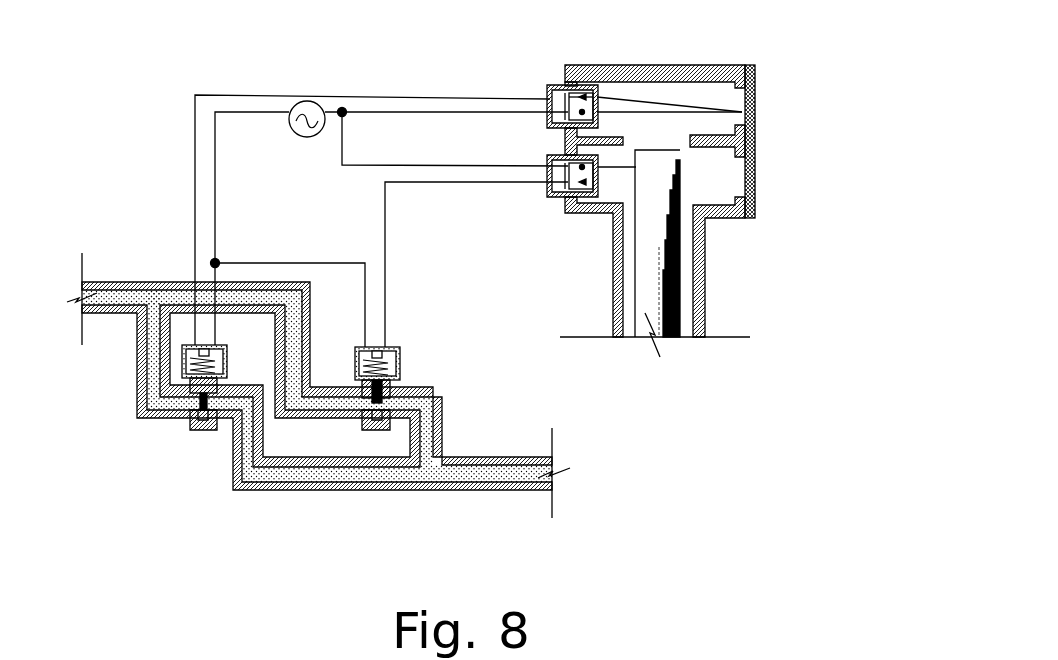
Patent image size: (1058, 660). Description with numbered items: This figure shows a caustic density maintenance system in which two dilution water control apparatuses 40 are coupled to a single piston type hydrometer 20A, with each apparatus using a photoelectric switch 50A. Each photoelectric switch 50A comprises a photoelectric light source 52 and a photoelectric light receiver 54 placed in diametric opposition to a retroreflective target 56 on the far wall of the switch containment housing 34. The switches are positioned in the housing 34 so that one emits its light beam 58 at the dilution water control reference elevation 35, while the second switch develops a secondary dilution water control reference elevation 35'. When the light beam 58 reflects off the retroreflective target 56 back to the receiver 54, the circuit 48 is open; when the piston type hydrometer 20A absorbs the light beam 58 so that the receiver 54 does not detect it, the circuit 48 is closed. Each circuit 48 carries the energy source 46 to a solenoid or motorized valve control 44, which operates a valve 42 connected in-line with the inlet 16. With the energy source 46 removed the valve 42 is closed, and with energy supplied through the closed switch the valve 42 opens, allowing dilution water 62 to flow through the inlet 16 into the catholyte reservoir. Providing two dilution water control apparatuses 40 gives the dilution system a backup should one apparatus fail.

The inlet 16 is at (482, 475).
The piston type hydrometer 20A is at (680, 238).
The switch containment housing 34 is at (655, 65).
The dilution water control reference elevation 35 is at (832, 169).
The secondary dilution water control reference elevation 35' is at (827, 115).
The dilution water control apparatus 40 is at (357, 234).
The valve 42 is at (198, 432).
The valve control 44 is at (400, 355).
The energy source 46 is at (298, 130).
The circuit 48 is at (195, 142).
The photoelectric switch 50A is at (535, 83).
The photoelectric light source 52 is at (547, 155).
The photoelectric light receiver 54 is at (577, 213).
The retroreflective target 56 is at (755, 93).
The light beam 58 is at (708, 110).
The dilution water 62 is at (140, 332).